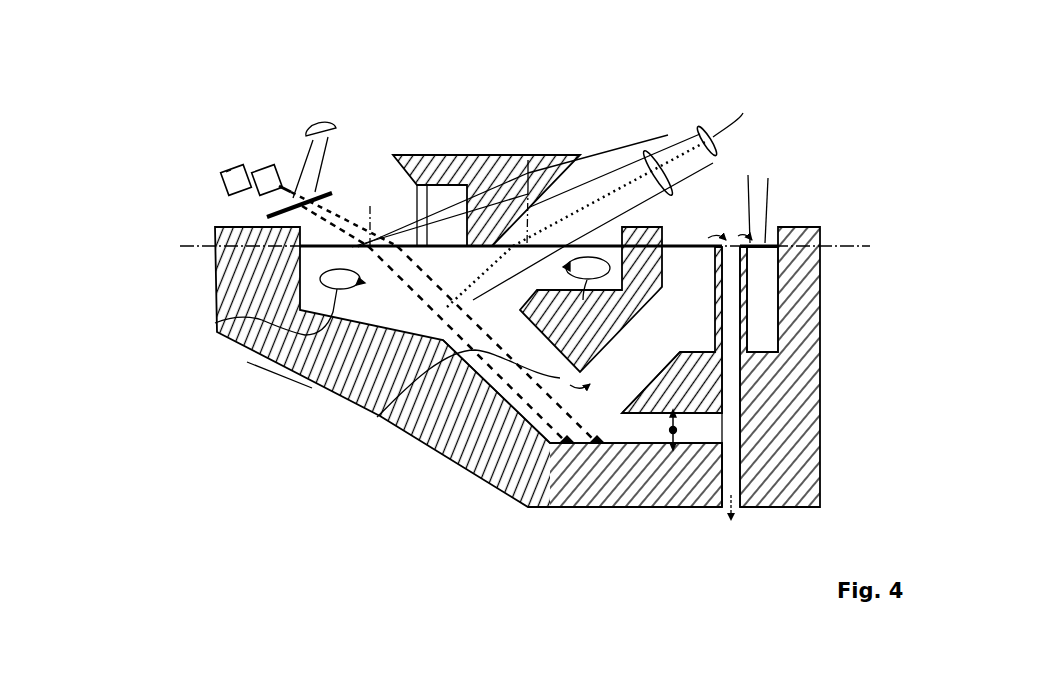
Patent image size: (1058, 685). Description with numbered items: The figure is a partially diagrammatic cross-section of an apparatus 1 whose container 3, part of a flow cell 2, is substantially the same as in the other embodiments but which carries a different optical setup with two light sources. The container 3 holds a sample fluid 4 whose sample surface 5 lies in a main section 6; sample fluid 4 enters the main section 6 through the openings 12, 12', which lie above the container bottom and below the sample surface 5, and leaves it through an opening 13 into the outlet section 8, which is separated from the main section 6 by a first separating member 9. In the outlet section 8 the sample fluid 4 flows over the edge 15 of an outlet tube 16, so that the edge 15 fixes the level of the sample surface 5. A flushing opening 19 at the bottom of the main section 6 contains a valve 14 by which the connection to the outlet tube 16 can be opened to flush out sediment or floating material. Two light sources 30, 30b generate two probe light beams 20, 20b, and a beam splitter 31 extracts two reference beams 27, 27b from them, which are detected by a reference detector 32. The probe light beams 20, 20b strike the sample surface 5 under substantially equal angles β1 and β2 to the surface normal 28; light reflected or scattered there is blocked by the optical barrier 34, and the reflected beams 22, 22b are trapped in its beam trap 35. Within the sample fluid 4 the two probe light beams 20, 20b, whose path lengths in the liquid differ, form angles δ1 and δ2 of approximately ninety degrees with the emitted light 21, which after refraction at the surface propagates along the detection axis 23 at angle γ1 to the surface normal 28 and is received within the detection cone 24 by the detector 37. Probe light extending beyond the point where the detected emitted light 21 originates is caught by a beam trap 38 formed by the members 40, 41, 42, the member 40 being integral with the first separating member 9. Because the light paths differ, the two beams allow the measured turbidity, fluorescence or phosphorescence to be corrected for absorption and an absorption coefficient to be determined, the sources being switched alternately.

The apparatus 1 is at (163, 105).
The flow cell 2 is at (411, 367).
The container 3 is at (227, 287).
The sample fluid 4 is at (247, 362).
The sample surface 5 is at (683, 235).
The main section 6 is at (575, 245).
The outlet section 8 is at (777, 227).
The first separating member 9 is at (633, 245).
The opening 12 is at (219, 325).
The opening 12' is at (422, 416).
The opening 13 is at (578, 470).
The valve 14 is at (667, 400).
The edge 15 is at (768, 178).
The outlet tube 16 is at (745, 392).
The flushing opening 19 is at (705, 430).
The probe light beam 20 is at (273, 198).
The probe light beam 20b is at (337, 197).
The emitted light 21 is at (715, 102).
The detection axis 23 is at (682, 137).
The reflected beam 22 is at (420, 217).
The reflected beam 22b is at (442, 222).
The detection cone 24 is at (660, 145).
The reference beam 27 is at (264, 166).
The reference beam 27b is at (296, 190).
The surface normal 28 is at (348, 247).
The light source 30 is at (224, 172).
The light source 30b is at (258, 172).
The beam splitter 31 is at (267, 220).
The reference detector 32 is at (321, 127).
The optical barrier 34 is at (533, 170).
The beam trap 35 is at (495, 213).
The detector 37 is at (748, 175).
The beam trap 38 is at (580, 442).
The member 40 is at (462, 425).
The member 41 is at (527, 503).
The member 42 is at (613, 417).